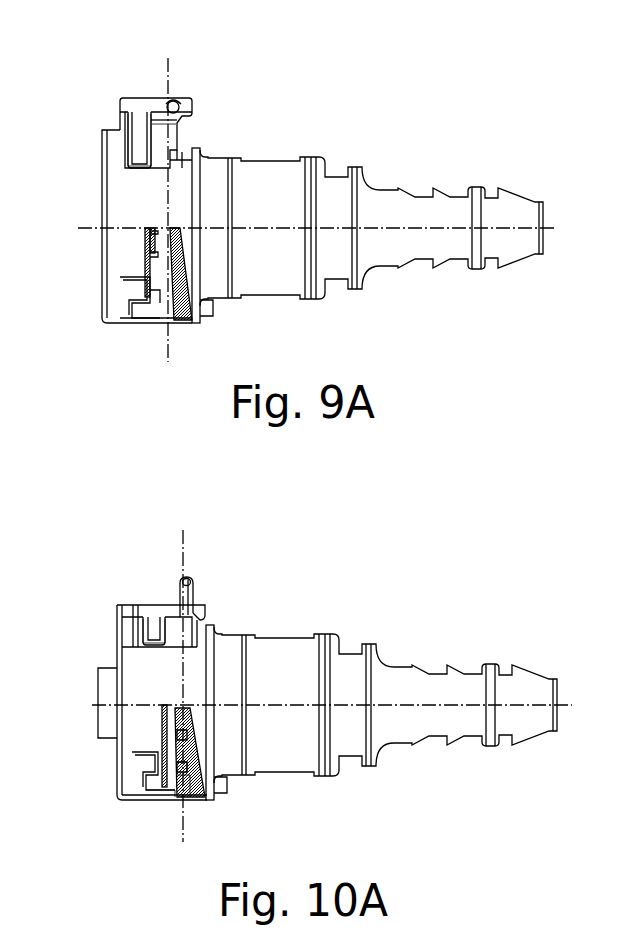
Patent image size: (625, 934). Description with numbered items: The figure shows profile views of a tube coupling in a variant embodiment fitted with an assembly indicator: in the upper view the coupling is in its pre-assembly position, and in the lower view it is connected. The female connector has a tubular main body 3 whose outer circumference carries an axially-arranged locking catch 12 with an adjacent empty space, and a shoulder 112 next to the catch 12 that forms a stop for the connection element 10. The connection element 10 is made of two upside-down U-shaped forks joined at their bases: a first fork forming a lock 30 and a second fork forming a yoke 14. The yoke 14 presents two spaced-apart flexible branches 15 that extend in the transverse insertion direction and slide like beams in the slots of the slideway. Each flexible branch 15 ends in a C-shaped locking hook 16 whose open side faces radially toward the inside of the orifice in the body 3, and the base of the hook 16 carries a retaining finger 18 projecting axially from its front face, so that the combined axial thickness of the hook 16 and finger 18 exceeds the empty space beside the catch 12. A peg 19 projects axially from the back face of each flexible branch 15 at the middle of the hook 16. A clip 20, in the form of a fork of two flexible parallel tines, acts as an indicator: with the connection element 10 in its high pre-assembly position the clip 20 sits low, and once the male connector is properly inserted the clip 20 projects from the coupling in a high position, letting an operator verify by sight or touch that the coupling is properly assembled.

In FIG. 9A, the main body 3 is at (202, 278).
In FIG. 10A, the main body 3 is at (231, 763).
In FIG. 9A, the connection element 10 is at (134, 88).
In FIG. 10A, the connection element 10 is at (143, 588).
In FIG. 9A, the locking catch 12 is at (153, 304).
In FIG. 9A, the yoke 14 is at (160, 124).
In FIG. 9A, the flexible branch 15 is at (147, 245).
In FIG. 10A, the flexible branch 15 is at (162, 727).
In FIG. 9A, the locking hook 16 is at (147, 279).
In FIG. 10A, the locking hook 16 is at (182, 798).
In FIG. 10A, the retaining finger 18 is at (165, 800).
In FIG. 10A, the peg 19 is at (186, 770).
In FIG. 9A, the clip 20 is at (177, 100).
In FIG. 10A, the clip 20 is at (190, 580).
In FIG. 9A, the lock 30 is at (128, 112).
In FIG. 10A, the lock 30 is at (143, 630).
In FIG. 10A, the shoulder 112 is at (143, 774).